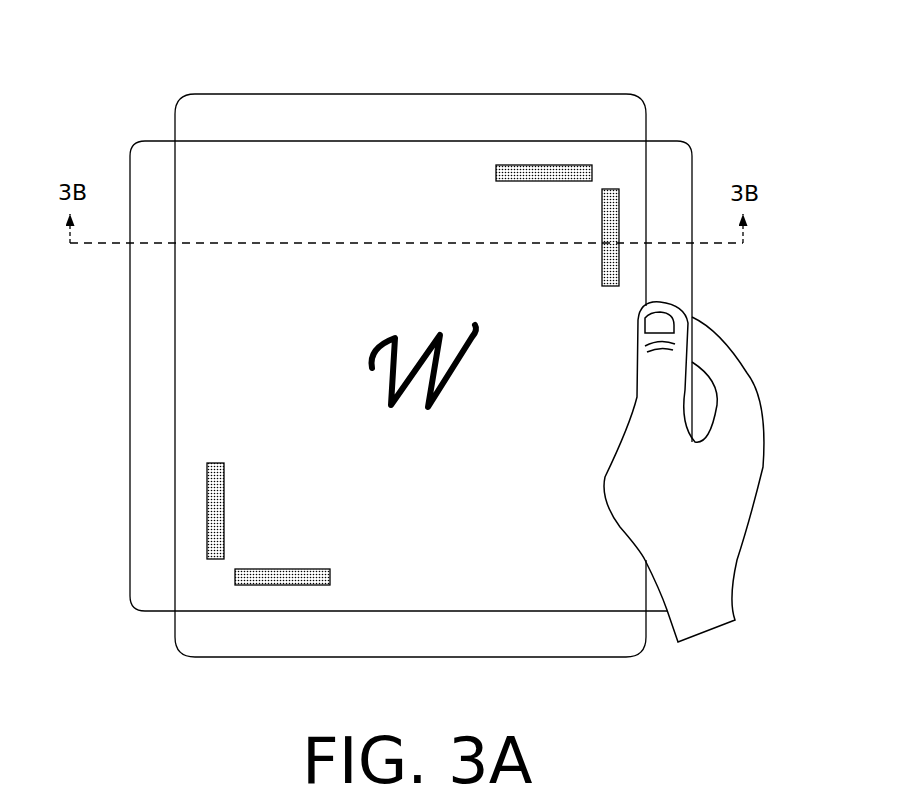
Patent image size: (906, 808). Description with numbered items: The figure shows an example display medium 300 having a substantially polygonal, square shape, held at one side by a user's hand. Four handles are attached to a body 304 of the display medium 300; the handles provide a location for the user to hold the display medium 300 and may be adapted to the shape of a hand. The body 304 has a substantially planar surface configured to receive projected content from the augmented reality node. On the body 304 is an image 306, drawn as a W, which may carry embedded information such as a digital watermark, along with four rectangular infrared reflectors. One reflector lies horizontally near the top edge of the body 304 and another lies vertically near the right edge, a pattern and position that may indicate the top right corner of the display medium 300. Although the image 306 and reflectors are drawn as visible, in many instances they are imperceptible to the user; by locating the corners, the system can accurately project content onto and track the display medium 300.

The display medium 300 is at (688, 45).
The body 304 is at (318, 195).
The image 306 is at (363, 325).